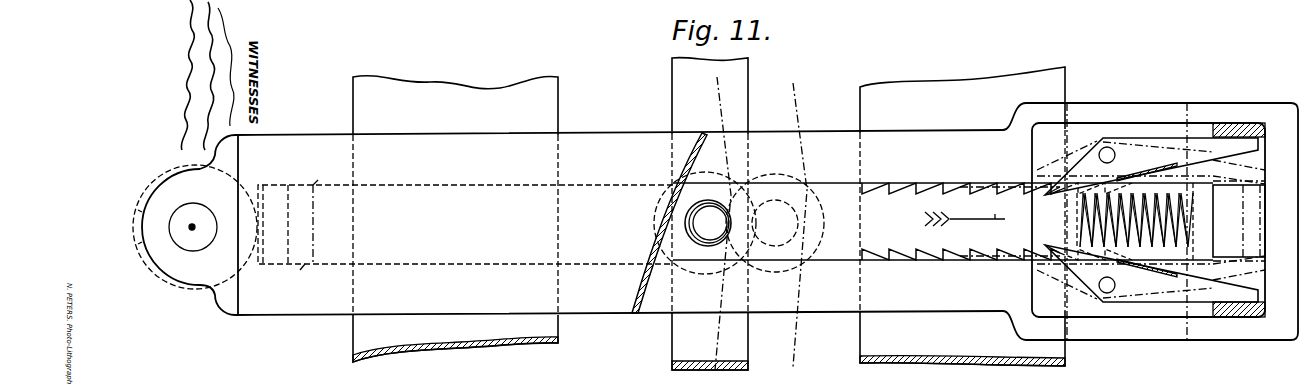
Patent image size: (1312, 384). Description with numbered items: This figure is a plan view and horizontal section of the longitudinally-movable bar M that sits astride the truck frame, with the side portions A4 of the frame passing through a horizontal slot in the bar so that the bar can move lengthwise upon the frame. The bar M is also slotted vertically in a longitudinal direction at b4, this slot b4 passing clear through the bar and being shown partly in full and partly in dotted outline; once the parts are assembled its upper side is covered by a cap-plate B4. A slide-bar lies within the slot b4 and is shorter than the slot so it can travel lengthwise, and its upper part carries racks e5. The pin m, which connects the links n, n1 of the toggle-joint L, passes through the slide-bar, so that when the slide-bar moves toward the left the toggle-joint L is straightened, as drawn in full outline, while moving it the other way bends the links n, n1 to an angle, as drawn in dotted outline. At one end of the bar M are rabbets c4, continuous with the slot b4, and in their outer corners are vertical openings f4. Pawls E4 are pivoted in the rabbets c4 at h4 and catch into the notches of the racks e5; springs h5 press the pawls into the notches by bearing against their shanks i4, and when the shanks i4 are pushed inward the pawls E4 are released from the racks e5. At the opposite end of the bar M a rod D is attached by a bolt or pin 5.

The longitudinally-movable bar M is at (749, 221).
The rod D is at (160, 170).
The bolt or pin 5 is at (193, 227).
The cap-plate B4 is at (465, 206).
The vertical slot b4 is at (678, 224).
The side portions of the frame A4 is at (709, 216).
The link n is at (710, 214).
The link n1 is at (761, 223).
The toggle-joint L is at (701, 182).
The pin or bolt m is at (726, 223).
The racks e5 is at (943, 221).
The rabbets c4 is at (1148, 221).
The vertical openings f4 is at (1239, 219).
The pawls E4 is at (1151, 220).
The shanks of the pawls i4 is at (1157, 221).
The pivot of the pawls h4 is at (1113, 143).
The springs h5 is at (1153, 160).